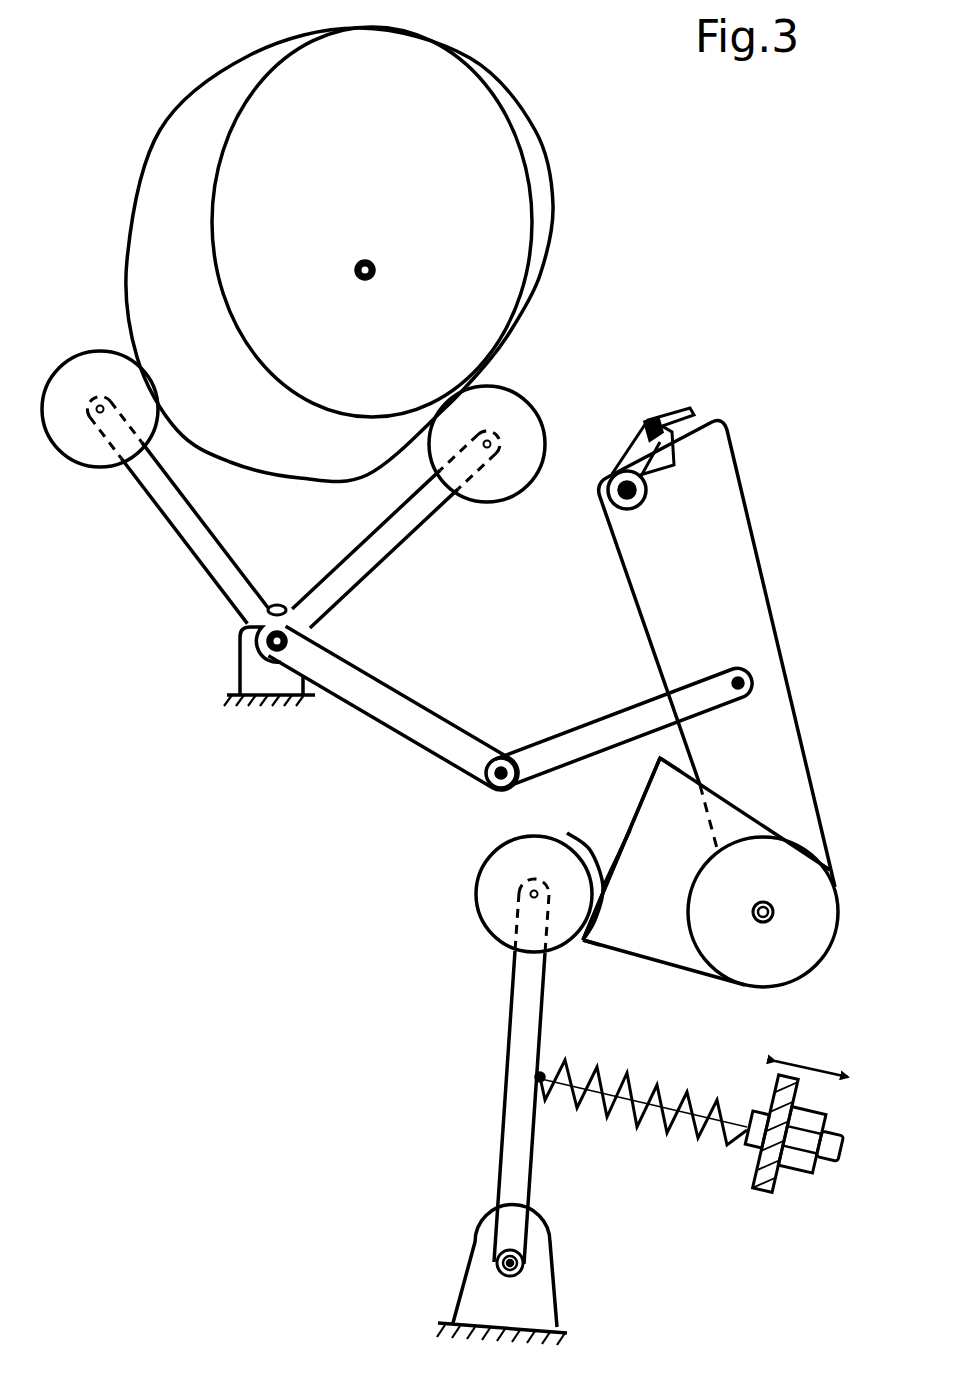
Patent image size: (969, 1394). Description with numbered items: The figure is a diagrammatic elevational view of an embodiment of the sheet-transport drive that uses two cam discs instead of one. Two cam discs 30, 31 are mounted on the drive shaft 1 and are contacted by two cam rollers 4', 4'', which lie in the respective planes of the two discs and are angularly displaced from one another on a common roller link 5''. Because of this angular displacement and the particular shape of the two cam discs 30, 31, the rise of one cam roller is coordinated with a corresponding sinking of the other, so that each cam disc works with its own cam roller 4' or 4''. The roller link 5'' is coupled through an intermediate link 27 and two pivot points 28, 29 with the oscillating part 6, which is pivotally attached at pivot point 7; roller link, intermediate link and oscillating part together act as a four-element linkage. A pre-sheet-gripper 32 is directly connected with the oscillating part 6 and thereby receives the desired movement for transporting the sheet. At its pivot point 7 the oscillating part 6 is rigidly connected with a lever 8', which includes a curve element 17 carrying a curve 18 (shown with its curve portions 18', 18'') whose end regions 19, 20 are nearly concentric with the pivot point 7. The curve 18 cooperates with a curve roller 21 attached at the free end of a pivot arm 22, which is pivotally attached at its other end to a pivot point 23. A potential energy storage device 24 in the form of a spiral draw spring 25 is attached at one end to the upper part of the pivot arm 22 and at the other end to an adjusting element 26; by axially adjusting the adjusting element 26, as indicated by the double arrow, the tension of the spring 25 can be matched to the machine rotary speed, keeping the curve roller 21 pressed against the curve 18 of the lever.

The drive shaft 1 is at (370, 262).
The cam disc 30 is at (548, 199).
The cam disc 31 is at (513, 252).
The cam roller 4' is at (100, 437).
The cam roller 4'' is at (487, 480).
The roller link 5'' is at (393, 708).
The pivot point 29 is at (492, 780).
The intermediate link 27 is at (624, 727).
The pivot point 28 is at (752, 680).
The oscillating part 6 is at (740, 583).
The pre-sheet-gripper 32 is at (678, 400).
The curve element 17 is at (643, 930).
The lever 8' is at (664, 997).
The curve 18 is at (615, 849).
The curved cam surface portion 18' is at (573, 870).
The straight cam surface portion 18'' is at (609, 843).
The end region 19 is at (657, 760).
The end region 20 is at (582, 940).
The pivot point 7 is at (775, 915).
The curve roller 21 is at (503, 887).
The pivot arm 22 is at (514, 1104).
The pivot point 23 is at (523, 1262).
The potential energy storage device 24 is at (671, 1155).
The spiral draw spring 25 is at (580, 1105).
The adjusting element 26 is at (752, 1148).